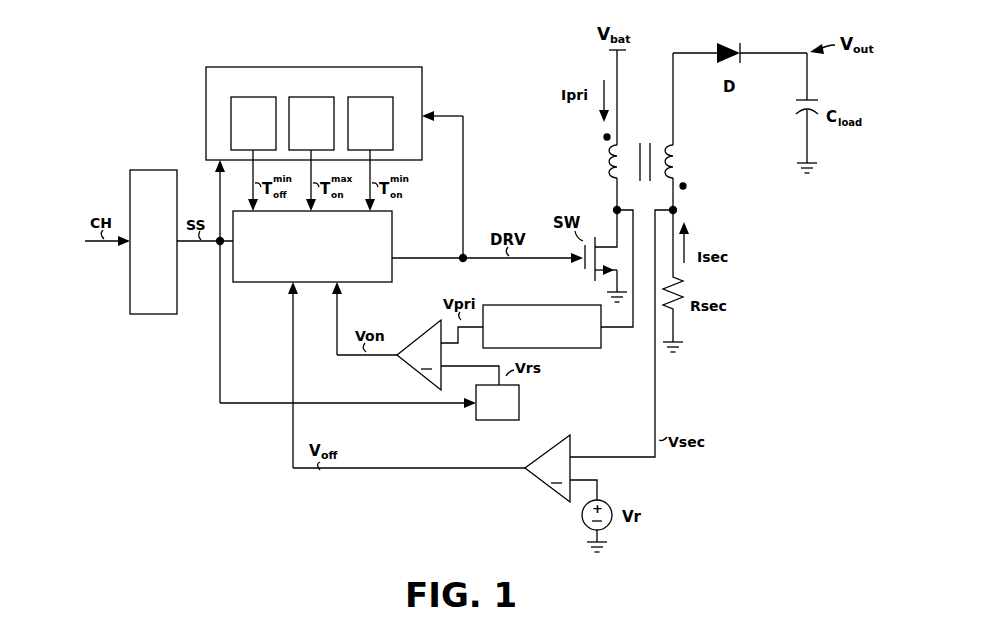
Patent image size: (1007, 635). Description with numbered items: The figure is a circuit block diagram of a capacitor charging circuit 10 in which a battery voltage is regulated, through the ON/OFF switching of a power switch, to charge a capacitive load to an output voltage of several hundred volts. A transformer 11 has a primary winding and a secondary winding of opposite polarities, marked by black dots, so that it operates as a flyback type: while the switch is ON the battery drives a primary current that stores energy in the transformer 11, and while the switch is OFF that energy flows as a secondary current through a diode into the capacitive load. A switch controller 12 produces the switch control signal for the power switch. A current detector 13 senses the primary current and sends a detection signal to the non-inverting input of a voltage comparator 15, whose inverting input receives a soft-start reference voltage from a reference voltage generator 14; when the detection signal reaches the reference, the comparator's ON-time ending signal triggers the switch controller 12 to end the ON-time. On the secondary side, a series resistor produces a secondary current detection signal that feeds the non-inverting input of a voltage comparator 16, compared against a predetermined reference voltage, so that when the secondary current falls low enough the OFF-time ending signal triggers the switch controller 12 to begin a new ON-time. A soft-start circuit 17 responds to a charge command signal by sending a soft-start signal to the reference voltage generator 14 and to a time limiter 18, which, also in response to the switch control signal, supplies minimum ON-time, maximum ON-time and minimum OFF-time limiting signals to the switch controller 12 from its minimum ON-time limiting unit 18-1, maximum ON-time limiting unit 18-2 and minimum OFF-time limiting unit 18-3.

The capacitor charging circuit 10 is at (70, 92).
The transformer 11 is at (651, 119).
The switch controller 12 is at (262, 284).
The current detector 13 is at (588, 350).
The reference voltage generator 14 is at (519, 403).
The voltage comparator 15 is at (420, 329).
The voltage comparator 16 is at (544, 494).
The soft-start circuit 17 is at (157, 170).
The time limiter 18 is at (314, 100).
The minimum ON-time limiting unit 18-1 is at (370, 123).
The maximum ON-time limiting unit 18-2 is at (311, 123).
The minimum OFF-time limiting unit 18-3 is at (253, 123).